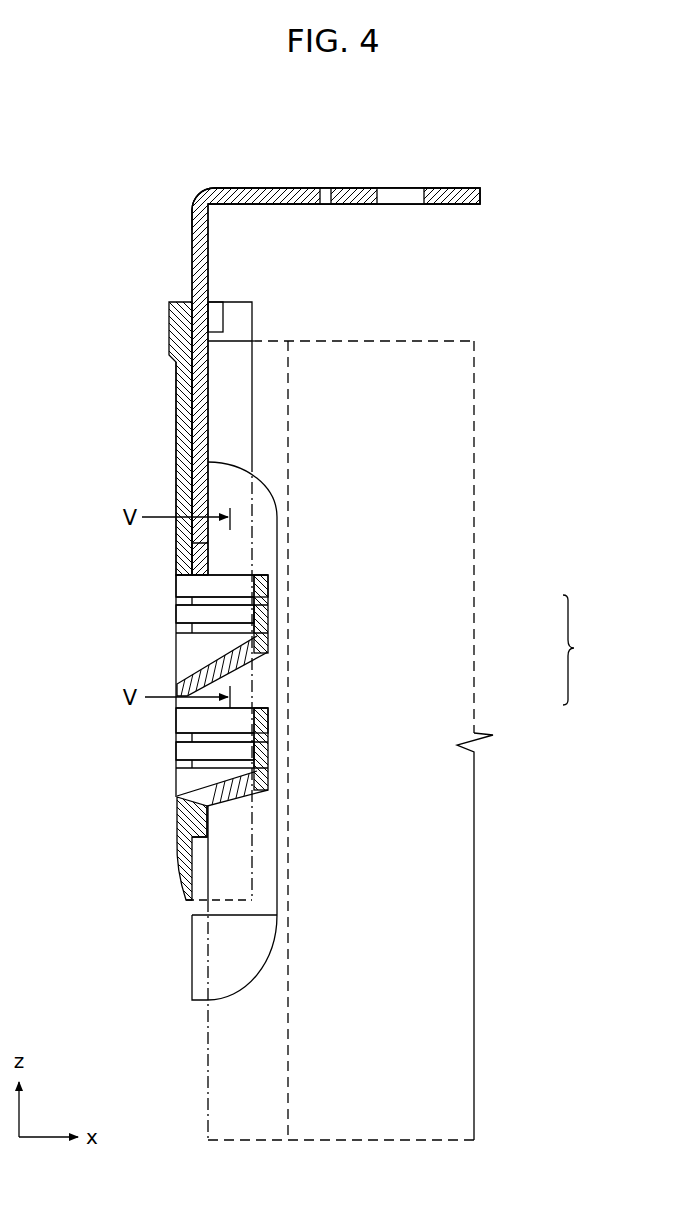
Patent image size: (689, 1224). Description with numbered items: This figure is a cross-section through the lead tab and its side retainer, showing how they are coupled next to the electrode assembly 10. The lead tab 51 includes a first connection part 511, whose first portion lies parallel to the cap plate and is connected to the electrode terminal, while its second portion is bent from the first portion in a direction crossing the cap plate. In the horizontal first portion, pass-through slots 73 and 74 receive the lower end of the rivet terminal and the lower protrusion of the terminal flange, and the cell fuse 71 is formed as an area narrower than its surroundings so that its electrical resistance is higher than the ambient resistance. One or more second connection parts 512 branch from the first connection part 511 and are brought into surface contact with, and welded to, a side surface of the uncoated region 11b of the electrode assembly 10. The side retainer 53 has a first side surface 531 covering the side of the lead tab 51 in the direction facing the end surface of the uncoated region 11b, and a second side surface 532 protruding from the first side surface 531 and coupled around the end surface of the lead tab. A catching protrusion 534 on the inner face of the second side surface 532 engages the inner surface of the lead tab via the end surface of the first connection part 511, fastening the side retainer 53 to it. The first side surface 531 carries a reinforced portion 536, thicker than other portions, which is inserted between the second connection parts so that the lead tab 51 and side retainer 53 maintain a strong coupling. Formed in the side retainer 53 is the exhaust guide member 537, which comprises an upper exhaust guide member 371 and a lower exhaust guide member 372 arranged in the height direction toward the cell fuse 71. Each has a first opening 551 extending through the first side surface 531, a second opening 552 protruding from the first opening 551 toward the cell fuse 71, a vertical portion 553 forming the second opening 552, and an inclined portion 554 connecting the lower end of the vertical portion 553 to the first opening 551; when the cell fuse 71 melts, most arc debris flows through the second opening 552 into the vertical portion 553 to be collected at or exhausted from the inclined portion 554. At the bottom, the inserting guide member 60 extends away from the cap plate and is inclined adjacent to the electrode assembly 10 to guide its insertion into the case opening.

The electrode assembly 10 is at (390, 1115).
The uncoated region 11b is at (243, 1115).
The lead tab 51 is at (467, 186).
The first connection part 511 is at (190, 222).
The cell fuse 71 is at (237, 200).
The pass-through slot 73 is at (400, 205).
The pass-through slot 74 is at (326, 204).
The side retainer 53 is at (168, 463).
The first side surface 531 is at (176, 390).
The second side surface 532 is at (235, 312).
The catching protrusion 534 is at (215, 310).
The reinforced portion 536 is at (200, 548).
The exhaust guide member 537 is at (590, 650).
The upper exhaust guide member 371 is at (272, 603).
The lower exhaust guide member 372 is at (272, 717).
The first opening 551 is at (176, 653).
The second opening 552 is at (243, 575).
The vertical portion 553 is at (256, 615).
The inclined portion 554 is at (256, 680).
The second connection part 512 is at (278, 830).
The inserting guide member 60 is at (178, 842).